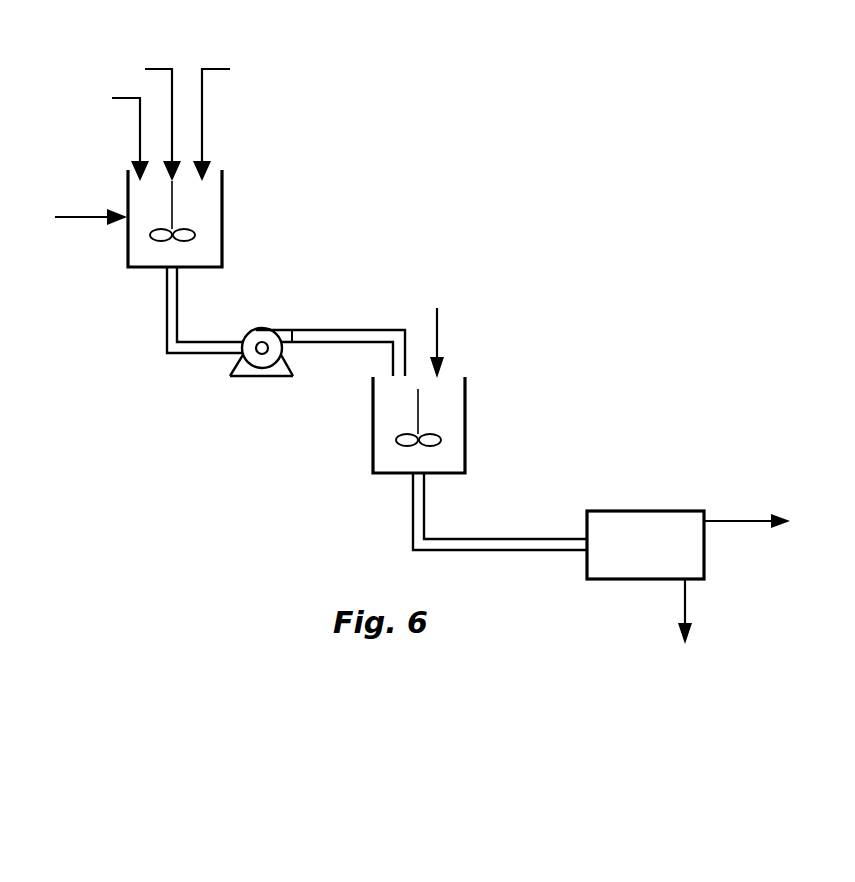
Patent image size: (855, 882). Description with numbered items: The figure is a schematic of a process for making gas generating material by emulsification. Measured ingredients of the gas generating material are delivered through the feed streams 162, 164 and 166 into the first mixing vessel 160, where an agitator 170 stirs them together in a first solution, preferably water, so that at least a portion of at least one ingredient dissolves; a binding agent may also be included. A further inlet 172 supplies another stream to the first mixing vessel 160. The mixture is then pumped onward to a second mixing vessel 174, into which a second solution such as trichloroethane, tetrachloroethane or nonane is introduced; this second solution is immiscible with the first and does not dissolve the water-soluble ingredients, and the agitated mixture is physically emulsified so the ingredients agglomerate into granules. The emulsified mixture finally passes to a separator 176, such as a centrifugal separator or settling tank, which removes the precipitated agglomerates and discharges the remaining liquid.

The first mixing vessel 160 is at (222, 212).
The first feed stream 162 is at (122, 98).
The second feed stream 164 is at (160, 69).
The third feed stream 166 is at (222, 69).
The agitator 170 is at (193, 250).
The additional feed stream 172 is at (83, 217).
The second mixing vessel 174 is at (392, 412).
The separation unit 176 is at (664, 556).